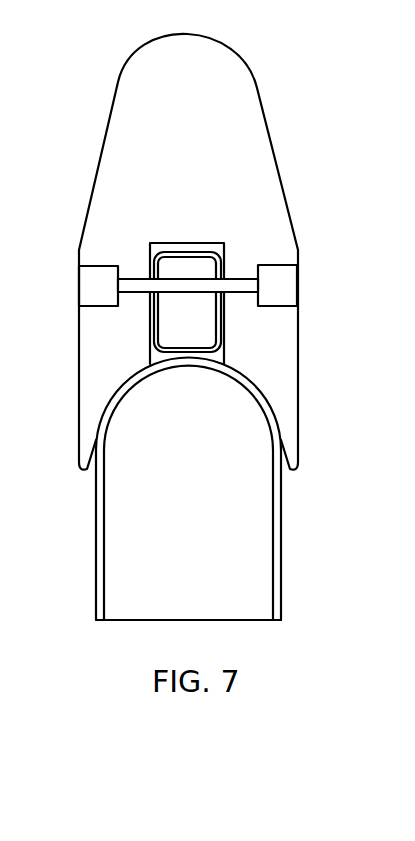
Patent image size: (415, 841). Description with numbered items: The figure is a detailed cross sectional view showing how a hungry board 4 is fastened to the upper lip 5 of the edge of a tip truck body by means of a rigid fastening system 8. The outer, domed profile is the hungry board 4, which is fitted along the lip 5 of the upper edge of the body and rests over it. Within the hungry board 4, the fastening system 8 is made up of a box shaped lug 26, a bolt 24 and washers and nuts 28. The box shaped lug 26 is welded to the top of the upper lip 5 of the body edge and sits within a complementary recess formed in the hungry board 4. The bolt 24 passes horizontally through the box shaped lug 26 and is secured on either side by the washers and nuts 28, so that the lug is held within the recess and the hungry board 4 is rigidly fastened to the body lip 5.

The hungry board 4 is at (110, 112).
The upper lip 5 is at (127, 388).
The rigid fastening system 8 is at (224, 246).
The bolt 24 is at (182, 288).
The box shaped lug 26 is at (218, 348).
The washers and nuts 28 is at (93, 277).